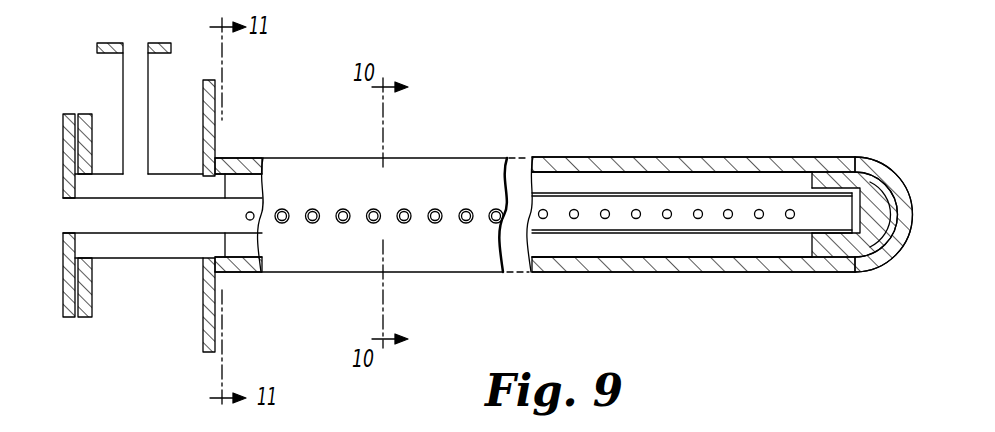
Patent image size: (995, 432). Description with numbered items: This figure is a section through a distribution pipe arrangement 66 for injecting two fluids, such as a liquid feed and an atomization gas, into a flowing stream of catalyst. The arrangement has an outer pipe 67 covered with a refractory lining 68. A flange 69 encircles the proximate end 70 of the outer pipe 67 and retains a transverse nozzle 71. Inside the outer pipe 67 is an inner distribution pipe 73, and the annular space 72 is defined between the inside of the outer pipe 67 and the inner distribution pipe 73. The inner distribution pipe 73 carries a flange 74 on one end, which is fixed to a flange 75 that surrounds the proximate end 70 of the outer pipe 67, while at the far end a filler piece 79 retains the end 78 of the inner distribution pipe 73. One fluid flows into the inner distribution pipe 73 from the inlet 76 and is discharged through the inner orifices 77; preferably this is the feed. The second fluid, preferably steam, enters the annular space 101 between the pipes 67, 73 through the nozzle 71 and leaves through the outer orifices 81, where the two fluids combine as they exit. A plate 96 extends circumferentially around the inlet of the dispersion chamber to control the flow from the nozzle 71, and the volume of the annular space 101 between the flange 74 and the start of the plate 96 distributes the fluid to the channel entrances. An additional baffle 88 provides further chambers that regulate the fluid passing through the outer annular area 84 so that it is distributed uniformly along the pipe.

The distribution pipe arrangement 66 is at (470, 140).
The outer pipe 67 is at (707, 160).
The refractory lining 68 is at (767, 158).
The flange 69 is at (216, 101).
The proximate end 70 is at (168, 260).
The transverse nozzle 71 is at (150, 75).
The annular space 72 is at (657, 243).
The inner distribution pipe 73 is at (718, 234).
The flange 74 is at (65, 303).
The flange 75 is at (93, 294).
The inlet 76 is at (78, 230).
The inner orifices 77 is at (466, 208).
The end 78 is at (828, 210).
The filler piece 79 is at (839, 250).
The outer orifices 81 is at (418, 186).
The outer annular area 84 is at (242, 187).
The baffle 88 is at (225, 184).
The plate 96 is at (229, 248).
The annular space 101 is at (108, 187).